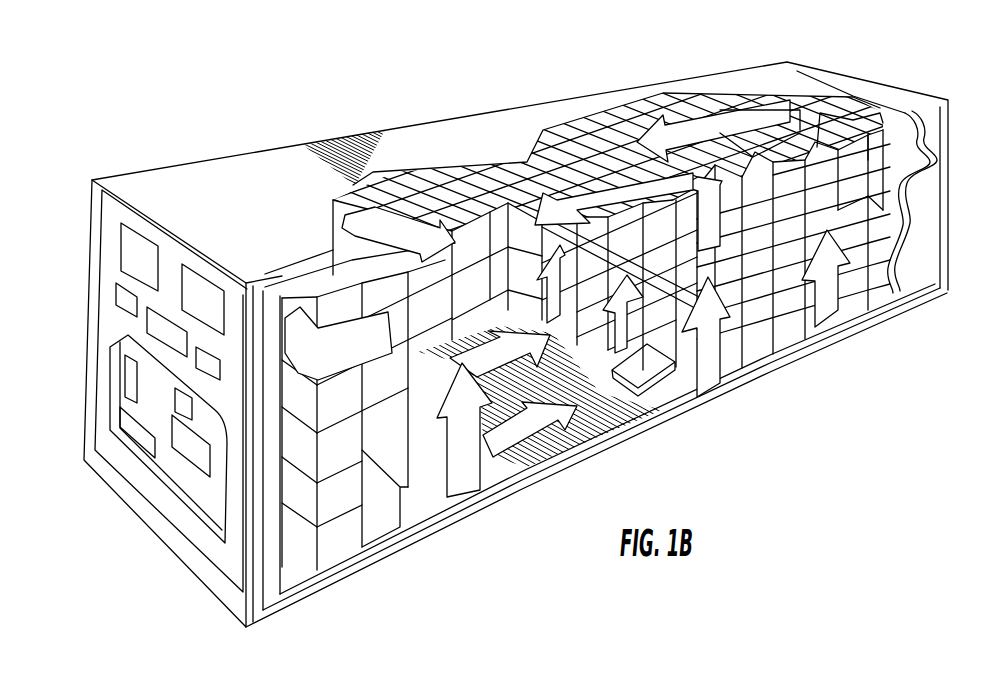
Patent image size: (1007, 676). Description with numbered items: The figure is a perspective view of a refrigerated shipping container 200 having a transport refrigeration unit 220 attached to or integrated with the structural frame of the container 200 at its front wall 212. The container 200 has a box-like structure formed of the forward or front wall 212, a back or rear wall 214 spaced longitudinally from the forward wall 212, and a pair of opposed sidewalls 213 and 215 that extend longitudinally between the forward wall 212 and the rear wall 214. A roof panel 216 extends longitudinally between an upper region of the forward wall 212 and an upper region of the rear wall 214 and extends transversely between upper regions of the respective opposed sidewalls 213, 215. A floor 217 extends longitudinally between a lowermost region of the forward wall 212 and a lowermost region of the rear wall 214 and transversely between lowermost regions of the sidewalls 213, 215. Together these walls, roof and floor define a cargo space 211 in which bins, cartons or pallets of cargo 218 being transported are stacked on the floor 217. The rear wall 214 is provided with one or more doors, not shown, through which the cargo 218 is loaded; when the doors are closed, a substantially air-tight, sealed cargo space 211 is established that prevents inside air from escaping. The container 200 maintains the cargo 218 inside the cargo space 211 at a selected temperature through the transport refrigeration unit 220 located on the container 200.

The refrigerated shipping container 200 is at (406, 125).
The cargo space 211 is at (598, 350).
The front wall 212 is at (248, 523).
The sidewall 213 is at (920, 272).
The rear wall 214 is at (950, 195).
The sidewall 215 is at (760, 98).
The roof panel 216 is at (480, 146).
The floor 217 is at (500, 493).
The cargo 218 is at (758, 283).
The transport refrigeration unit 220 is at (121, 324).